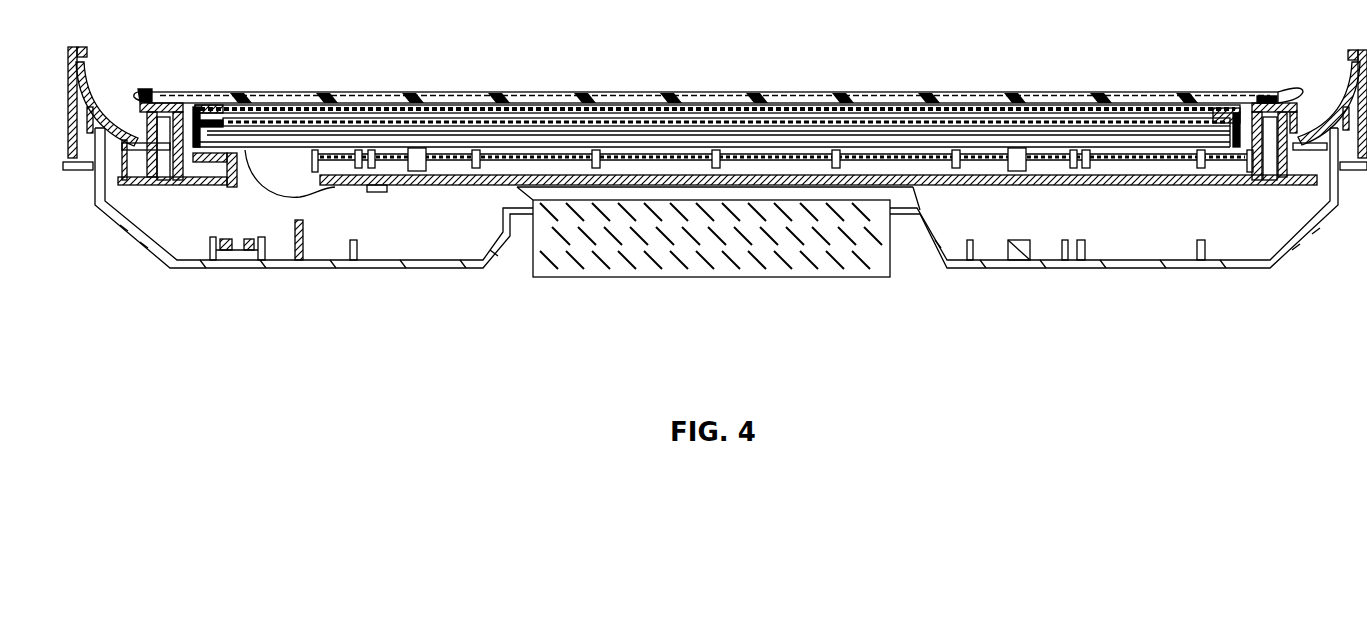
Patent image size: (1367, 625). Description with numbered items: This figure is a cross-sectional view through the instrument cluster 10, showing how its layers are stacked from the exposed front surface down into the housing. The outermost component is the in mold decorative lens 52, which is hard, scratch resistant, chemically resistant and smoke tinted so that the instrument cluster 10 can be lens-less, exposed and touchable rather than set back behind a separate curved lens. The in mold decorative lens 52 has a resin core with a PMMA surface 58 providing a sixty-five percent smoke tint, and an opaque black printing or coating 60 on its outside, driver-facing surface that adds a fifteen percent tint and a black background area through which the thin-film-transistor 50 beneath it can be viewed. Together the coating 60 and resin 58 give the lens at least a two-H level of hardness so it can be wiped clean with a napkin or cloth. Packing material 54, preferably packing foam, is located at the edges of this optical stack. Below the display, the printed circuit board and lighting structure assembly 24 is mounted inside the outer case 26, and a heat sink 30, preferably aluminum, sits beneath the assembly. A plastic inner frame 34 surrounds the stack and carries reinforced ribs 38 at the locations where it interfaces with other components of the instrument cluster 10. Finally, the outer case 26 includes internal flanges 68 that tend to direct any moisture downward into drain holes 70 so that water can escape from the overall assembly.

The instrument cluster 10 is at (165, 318).
The printed circuit board and lighting structure assembly 24 is at (456, 186).
The outer case 26 is at (318, 267).
The heat sink 30 is at (896, 262).
The inner frame 34 is at (415, 148).
The reinforced ribs 38 is at (1016, 150).
The thin-film-transistor 50 is at (768, 128).
The in mold decorative lens 52 is at (614, 92).
The packing material 54 is at (165, 96).
The PMMA surface 58 is at (876, 103).
The coating 60 is at (975, 92).
The internal flanges 68 is at (355, 242).
The drain holes 70 is at (385, 270).